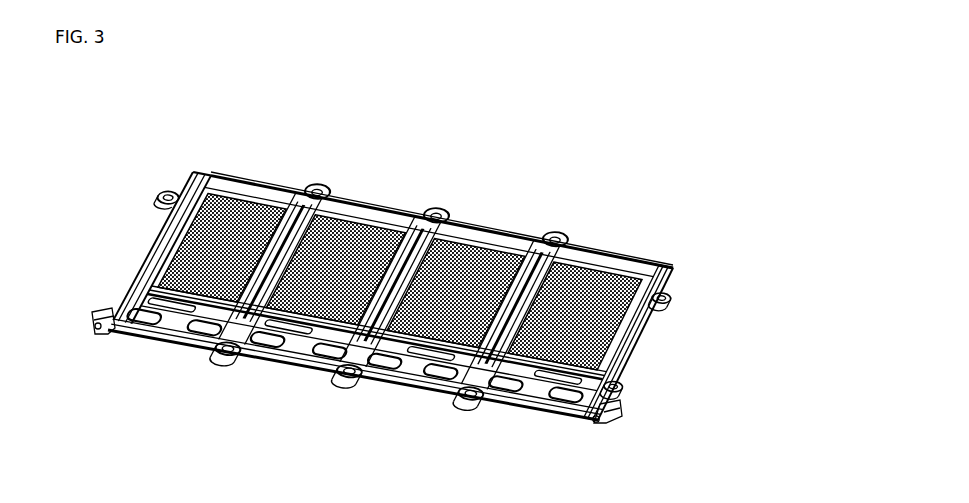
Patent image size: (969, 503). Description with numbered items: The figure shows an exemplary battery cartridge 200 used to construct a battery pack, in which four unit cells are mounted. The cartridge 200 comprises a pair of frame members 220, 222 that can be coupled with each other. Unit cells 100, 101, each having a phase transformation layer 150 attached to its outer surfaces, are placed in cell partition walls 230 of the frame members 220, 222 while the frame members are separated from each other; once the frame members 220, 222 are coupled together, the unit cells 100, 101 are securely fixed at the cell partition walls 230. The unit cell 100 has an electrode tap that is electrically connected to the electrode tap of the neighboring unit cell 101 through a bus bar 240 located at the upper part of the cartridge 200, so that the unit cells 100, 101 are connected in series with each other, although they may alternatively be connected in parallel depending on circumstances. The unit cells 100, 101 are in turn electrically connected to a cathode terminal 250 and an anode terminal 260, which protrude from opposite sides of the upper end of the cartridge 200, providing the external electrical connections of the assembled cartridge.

The unit cell 100 is at (612, 249).
The unit cell 101 is at (489, 229).
The phase transformation layer 150 is at (614, 356).
The cartridge 200 is at (170, 139).
The frame member 220 is at (326, 372).
The frame member 222 is at (343, 380).
The cell partition wall 230 is at (456, 218).
The bus bar 240 is at (240, 337).
The cathode terminal 250 is at (587, 413).
The anode terminal 260 is at (88, 324).